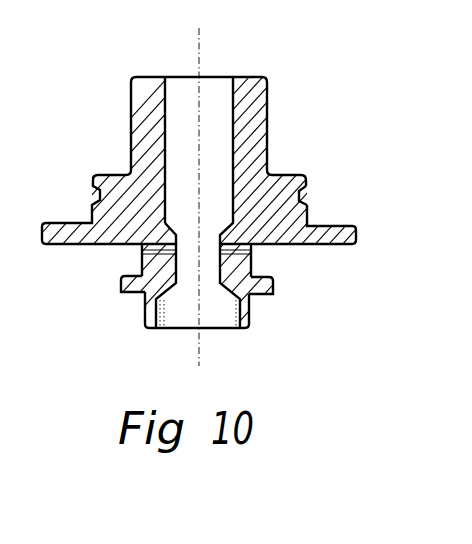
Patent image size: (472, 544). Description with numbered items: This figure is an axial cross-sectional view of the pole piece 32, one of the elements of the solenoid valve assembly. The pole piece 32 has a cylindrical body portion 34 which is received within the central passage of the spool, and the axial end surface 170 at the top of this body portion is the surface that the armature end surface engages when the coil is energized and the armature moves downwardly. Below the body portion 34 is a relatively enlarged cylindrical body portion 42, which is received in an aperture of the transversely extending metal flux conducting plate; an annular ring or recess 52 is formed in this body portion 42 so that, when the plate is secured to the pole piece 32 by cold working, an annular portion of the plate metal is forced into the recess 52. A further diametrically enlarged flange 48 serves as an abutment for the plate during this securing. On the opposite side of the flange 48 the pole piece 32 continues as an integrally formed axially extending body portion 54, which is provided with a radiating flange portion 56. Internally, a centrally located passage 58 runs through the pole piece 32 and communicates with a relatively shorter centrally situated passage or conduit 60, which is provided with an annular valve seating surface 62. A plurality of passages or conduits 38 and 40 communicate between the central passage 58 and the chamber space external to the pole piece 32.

The pole piece 32 is at (236, 272).
The cylindrical body portion 34 is at (131, 112).
The axial end surface 170 is at (153, 76).
The centrally located passage 58 is at (235, 93).
The annular ring or recess 52 is at (305, 198).
The enlarged cylindrical body portion 42 is at (311, 218).
The flange 48 is at (358, 236).
The passage or conduit 38 is at (165, 273).
The passage or conduit 40 is at (249, 258).
The radiating flange portion 56 is at (120, 279).
The axially extending body portion 54 is at (236, 272).
The annular valve seating surface 62 is at (159, 299).
The passage or conduit 60 is at (236, 307).